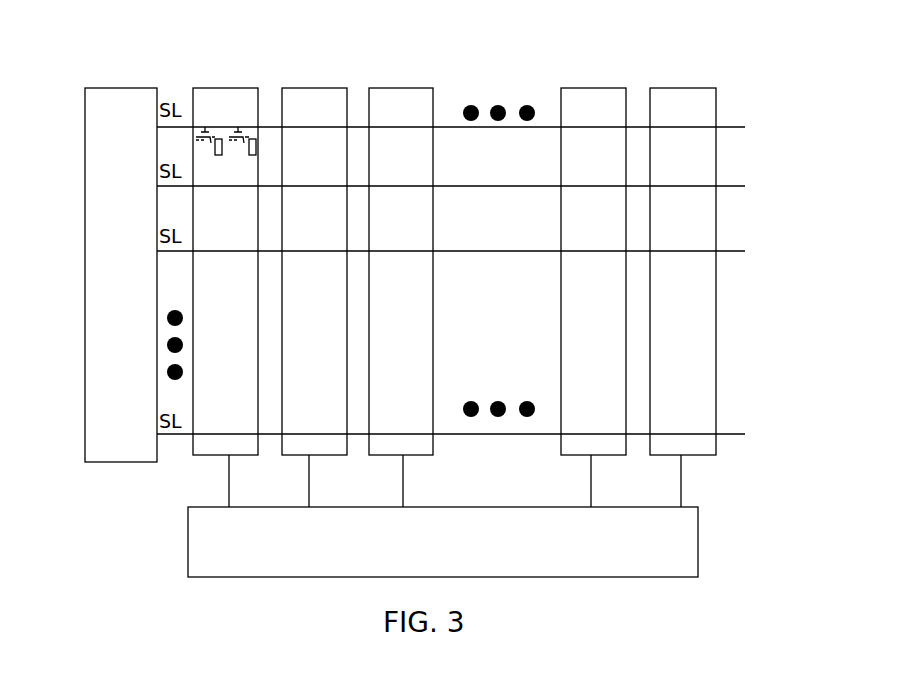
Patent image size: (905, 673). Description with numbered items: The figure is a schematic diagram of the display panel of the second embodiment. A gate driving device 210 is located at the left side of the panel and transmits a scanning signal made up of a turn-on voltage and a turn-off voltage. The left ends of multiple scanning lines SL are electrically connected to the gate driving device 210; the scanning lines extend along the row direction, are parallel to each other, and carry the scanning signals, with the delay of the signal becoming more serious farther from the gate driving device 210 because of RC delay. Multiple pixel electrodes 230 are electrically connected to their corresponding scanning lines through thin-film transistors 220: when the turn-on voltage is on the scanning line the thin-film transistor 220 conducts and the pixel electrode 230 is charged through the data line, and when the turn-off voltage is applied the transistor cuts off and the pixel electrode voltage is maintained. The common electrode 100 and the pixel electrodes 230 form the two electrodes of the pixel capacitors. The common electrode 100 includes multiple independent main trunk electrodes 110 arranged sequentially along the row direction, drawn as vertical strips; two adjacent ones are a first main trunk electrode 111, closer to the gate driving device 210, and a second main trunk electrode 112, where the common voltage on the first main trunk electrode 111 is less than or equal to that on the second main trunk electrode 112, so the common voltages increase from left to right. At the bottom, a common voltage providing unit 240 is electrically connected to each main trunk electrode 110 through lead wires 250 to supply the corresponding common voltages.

The common electrode 100 is at (687, 250).
The main trunk electrode 110 is at (693, 167).
The first main trunk electrode 111 is at (313, 103).
The second main trunk electrode 112 is at (400, 118).
The gate driving device 210 is at (85, 120).
The thin-film transistor 220 is at (203, 130).
The pixel electrode 230 is at (218, 137).
The common voltage providing unit 240 is at (678, 552).
The lead wire 250 is at (229, 480).